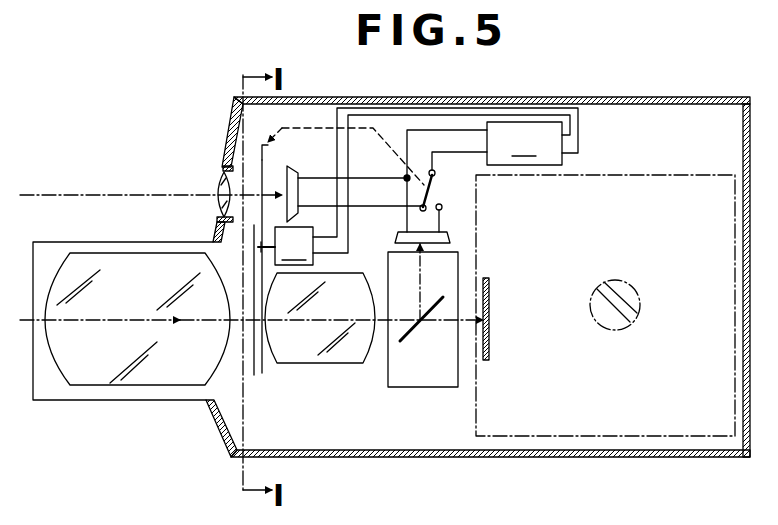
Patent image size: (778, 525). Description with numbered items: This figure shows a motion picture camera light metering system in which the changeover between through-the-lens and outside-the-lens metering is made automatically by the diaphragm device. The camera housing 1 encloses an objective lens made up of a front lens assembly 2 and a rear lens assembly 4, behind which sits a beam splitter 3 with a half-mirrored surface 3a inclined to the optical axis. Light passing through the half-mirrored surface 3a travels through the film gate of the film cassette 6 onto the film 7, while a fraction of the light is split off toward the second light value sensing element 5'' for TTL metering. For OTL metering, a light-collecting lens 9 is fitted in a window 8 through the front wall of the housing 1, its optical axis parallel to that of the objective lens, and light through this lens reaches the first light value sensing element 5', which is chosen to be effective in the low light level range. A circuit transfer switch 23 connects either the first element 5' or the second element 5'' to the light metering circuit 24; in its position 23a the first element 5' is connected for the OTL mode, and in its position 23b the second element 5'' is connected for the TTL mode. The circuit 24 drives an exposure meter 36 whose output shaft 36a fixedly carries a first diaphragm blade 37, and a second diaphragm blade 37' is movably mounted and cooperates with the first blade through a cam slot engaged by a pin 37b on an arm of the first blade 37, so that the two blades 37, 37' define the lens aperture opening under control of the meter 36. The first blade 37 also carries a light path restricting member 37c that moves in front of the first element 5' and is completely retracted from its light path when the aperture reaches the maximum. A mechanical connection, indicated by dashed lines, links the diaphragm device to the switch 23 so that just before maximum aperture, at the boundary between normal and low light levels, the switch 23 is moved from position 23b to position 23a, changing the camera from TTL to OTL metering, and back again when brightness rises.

The housing 1 is at (622, 97).
The front lens assembly 2 is at (103, 386).
The beam splitter 3 is at (445, 380).
The half-mirrored surface 3a is at (402, 344).
The rear lens assembly 4 is at (335, 355).
The first light value sensing element 5' is at (308, 185).
The second light value sensing element 5'' is at (450, 238).
The film cassette 6 is at (632, 193).
The film 7 is at (490, 290).
The window 8 is at (220, 167).
The light-collecting lens 9 is at (218, 190).
The circuit transfer switch 23 is at (435, 195).
The switch position for OTL mode 23a is at (420, 211).
The switch position for TTL mode 23b is at (443, 208).
The light metering circuit 24 is at (524, 143).
The exposure meter 36 is at (426, 186).
The output shaft 36a is at (262, 240).
The first diaphragm blade 37 is at (281, 279).
The second diaphragm blade 37' is at (265, 324).
The pin 37b is at (258, 253).
The light path restricting member 37c is at (266, 151).